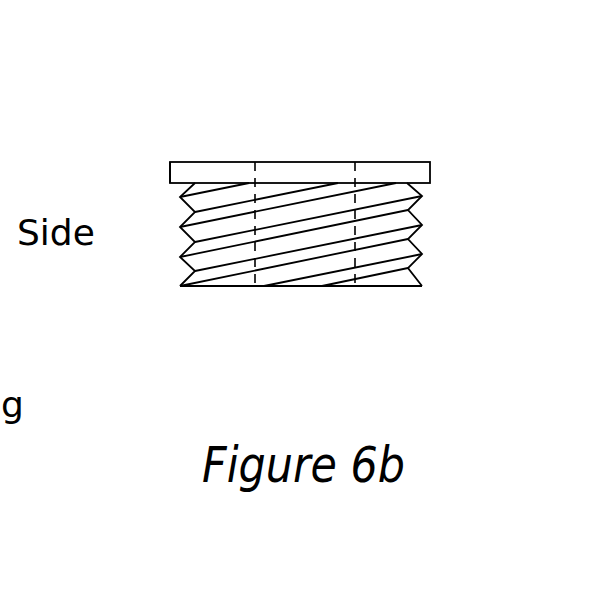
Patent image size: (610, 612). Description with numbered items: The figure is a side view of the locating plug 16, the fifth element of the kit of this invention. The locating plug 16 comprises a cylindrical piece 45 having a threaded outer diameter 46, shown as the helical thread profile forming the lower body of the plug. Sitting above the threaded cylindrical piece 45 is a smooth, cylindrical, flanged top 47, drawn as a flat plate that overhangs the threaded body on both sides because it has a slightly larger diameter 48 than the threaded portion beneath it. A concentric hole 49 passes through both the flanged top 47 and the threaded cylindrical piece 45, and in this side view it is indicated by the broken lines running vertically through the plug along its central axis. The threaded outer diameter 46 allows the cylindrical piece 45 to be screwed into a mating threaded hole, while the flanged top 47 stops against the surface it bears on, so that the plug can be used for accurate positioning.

The locating plug 16 is at (344, 221).
The cylindrical piece 45 is at (230, 253).
The threaded outer diameter 46 is at (418, 223).
The flanged top 47 is at (410, 162).
The diameter 48 is at (152, 170).
The concentric hole 49 is at (274, 268).